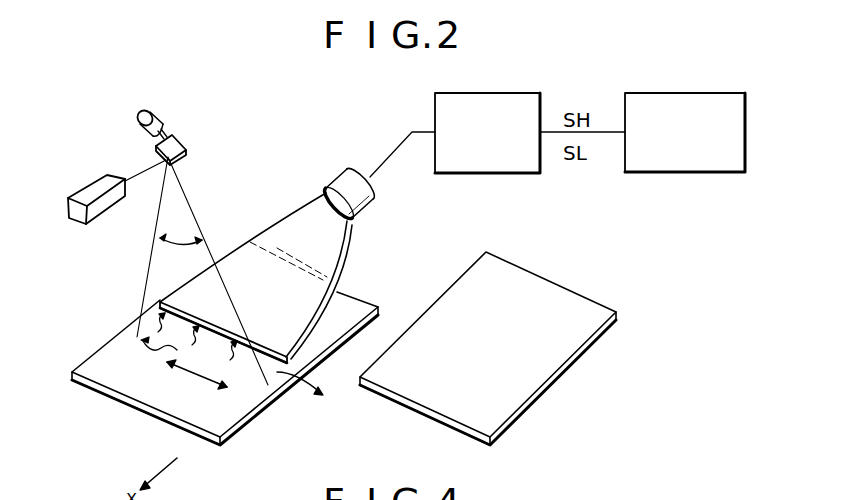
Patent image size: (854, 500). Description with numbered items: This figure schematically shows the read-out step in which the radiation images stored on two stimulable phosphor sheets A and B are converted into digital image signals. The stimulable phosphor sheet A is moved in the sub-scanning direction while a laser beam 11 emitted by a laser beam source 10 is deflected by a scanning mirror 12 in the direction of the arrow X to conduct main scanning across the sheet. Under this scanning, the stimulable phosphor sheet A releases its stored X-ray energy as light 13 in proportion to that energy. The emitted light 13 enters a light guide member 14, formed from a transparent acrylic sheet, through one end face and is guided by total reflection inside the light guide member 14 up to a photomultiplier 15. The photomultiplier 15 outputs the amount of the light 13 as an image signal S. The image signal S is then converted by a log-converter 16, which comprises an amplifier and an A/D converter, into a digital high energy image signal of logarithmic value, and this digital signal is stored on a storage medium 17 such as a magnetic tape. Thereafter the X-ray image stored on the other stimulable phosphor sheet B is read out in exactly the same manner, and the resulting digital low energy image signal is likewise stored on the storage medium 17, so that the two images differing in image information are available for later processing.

The laser beam source 10 is at (94, 180).
The laser beam 11 is at (198, 208).
The scanning mirror 12 is at (180, 142).
The light 13 is at (187, 340).
The light guide member 14 is at (292, 237).
The photomultiplier 15 is at (352, 180).
The log-converter 16 is at (505, 93).
The storage medium 17 is at (703, 92).
The stimulable phosphor sheet A is at (350, 300).
The stimulable phosphor sheet B is at (545, 358).
The image signal S is at (394, 150).